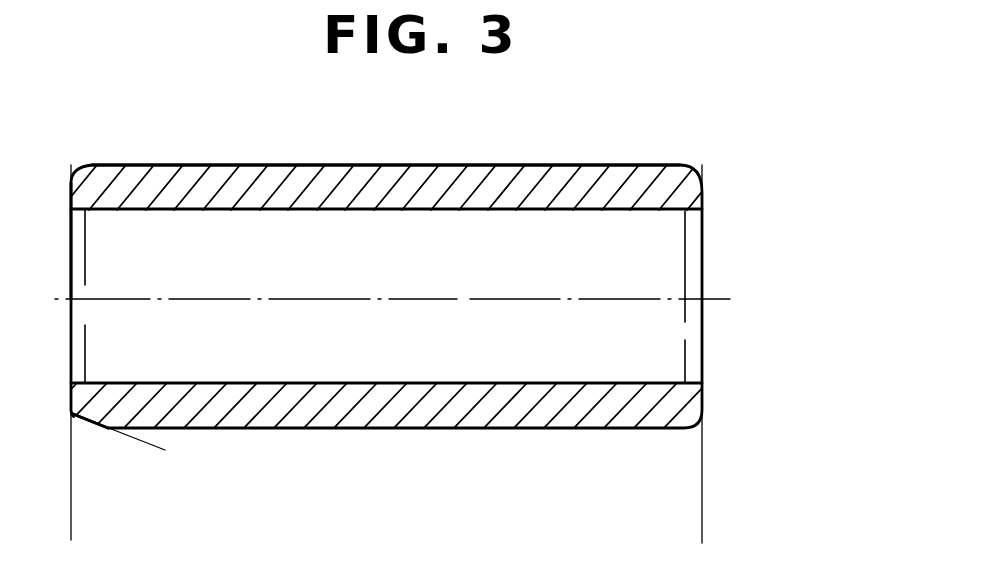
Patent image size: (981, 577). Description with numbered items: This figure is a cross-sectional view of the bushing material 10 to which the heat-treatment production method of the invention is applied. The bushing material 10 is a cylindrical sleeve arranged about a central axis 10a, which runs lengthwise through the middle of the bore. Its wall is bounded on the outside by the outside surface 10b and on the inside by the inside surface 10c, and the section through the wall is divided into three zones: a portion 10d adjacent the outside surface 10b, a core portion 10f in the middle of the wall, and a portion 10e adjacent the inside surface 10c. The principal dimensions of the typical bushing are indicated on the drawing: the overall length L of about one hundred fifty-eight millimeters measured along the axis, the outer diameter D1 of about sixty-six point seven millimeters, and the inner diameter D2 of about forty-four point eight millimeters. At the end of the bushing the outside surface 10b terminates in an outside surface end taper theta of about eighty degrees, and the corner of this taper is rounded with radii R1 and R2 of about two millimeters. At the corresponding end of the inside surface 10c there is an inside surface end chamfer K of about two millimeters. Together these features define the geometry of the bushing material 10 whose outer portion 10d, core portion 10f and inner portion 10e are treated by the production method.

The bushing material 10 is at (482, 167).
The axis 10a is at (537, 299).
The outside surface 10b is at (307, 165).
The inside surface 10c is at (520, 381).
The portion adjacent the outside surface 10d is at (363, 178).
The portion adjacent the inside surface 10e is at (362, 392).
The core portion 10f is at (402, 197).
The inside surface end chamfer K is at (71, 213).
The taper corner radius R1 is at (77, 414).
The taper corner radius R2 is at (108, 426).
The outside surface end taper theta is at (152, 448).
The outer diameter D1 is at (683, 167).
The inner diameter D2 is at (690, 211).
The length L is at (702, 526).